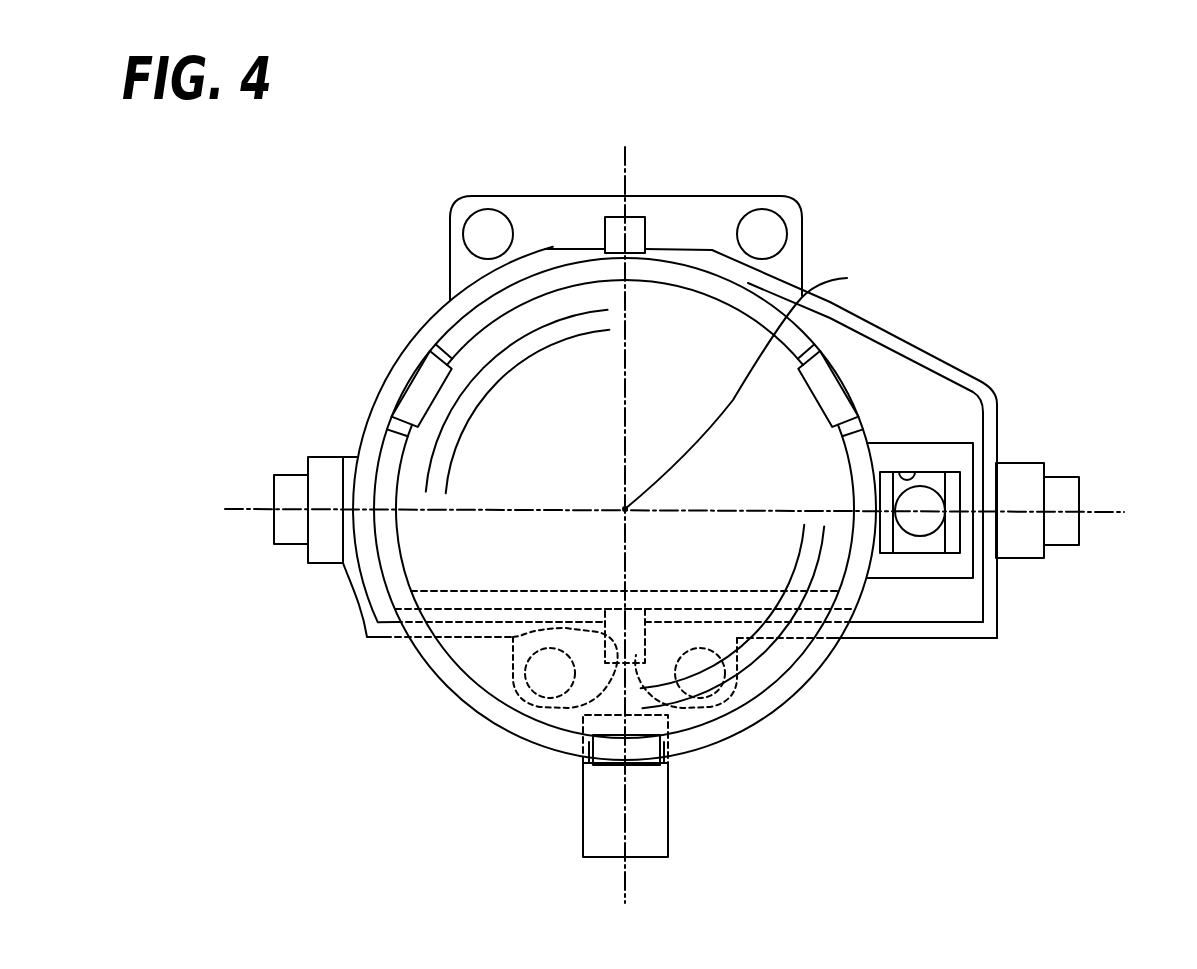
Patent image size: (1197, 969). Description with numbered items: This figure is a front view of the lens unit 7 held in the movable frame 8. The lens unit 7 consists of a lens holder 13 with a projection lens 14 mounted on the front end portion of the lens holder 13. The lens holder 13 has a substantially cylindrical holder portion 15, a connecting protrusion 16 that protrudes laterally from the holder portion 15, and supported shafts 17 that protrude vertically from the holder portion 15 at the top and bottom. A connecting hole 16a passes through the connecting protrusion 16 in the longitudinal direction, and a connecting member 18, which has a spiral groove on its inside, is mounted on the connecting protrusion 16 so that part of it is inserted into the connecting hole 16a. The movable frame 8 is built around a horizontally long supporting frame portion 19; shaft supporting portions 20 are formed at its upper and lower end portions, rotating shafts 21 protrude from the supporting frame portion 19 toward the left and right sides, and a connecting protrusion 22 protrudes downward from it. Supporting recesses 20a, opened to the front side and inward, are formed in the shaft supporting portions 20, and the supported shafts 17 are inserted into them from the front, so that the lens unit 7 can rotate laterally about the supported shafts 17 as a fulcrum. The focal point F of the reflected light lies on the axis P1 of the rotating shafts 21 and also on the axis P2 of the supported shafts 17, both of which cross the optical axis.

The lens unit 7 is at (551, 272).
The movable frame 8 is at (557, 195).
The lens holder 13 is at (455, 325).
The projection lens 14 is at (407, 460).
The holder portion 15 is at (446, 343).
The connecting protrusion 16 is at (918, 568).
The connecting hole 16a is at (912, 472).
The supported shafts 17 is at (618, 224).
The connecting member 18 is at (952, 480).
The supporting frame portion 19 is at (863, 322).
The shaft supporting portions 20 is at (727, 203).
The supporting recesses 20a is at (645, 223).
The rotating shafts 21 is at (293, 482).
The connecting protrusion 22 is at (660, 812).
The focal point F is at (743, 382).
The axis of the rotating shafts P1 is at (1098, 513).
The axis of the supported shafts P2 is at (625, 162).